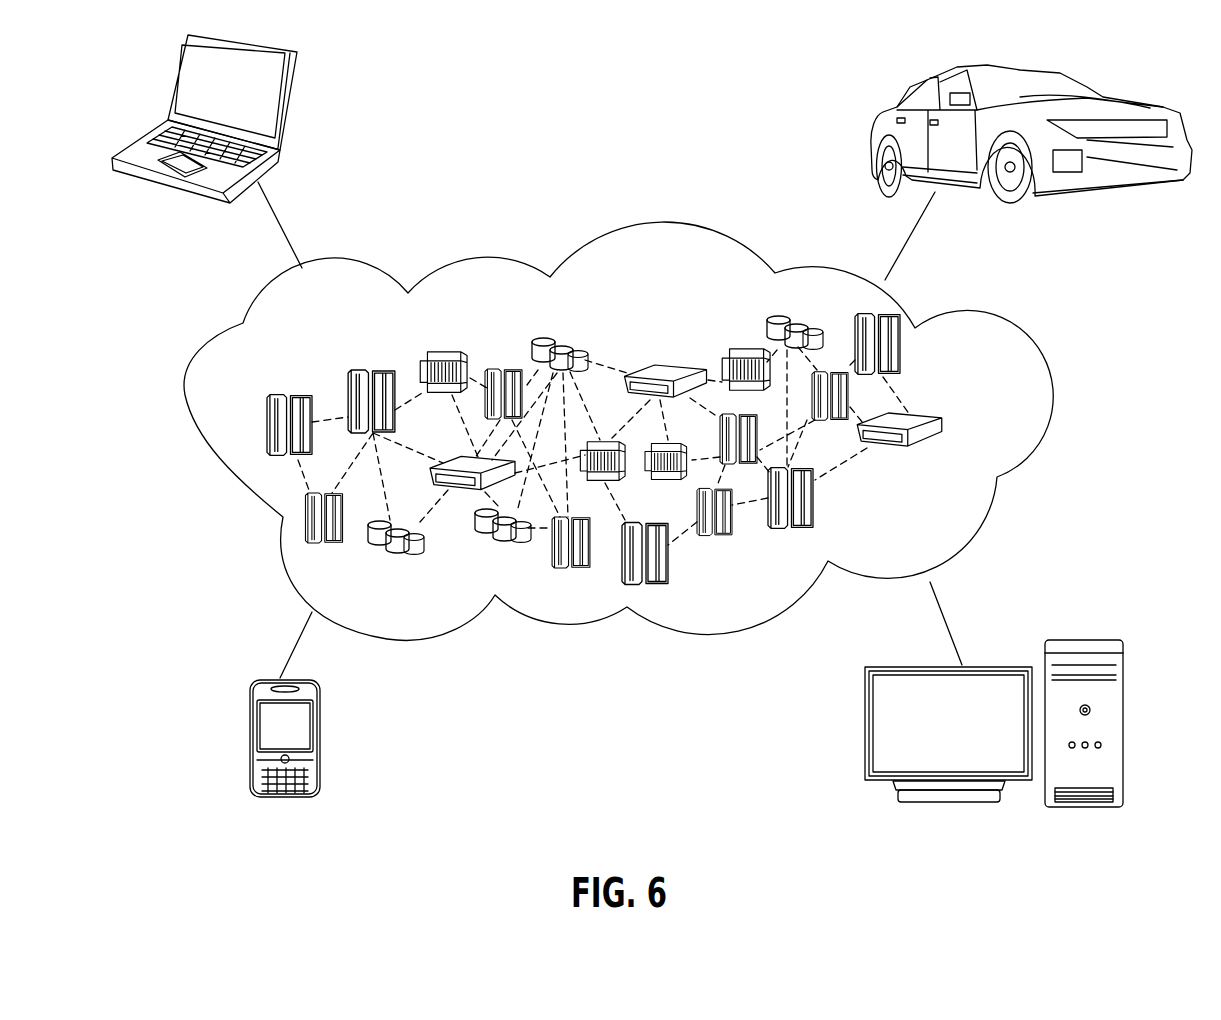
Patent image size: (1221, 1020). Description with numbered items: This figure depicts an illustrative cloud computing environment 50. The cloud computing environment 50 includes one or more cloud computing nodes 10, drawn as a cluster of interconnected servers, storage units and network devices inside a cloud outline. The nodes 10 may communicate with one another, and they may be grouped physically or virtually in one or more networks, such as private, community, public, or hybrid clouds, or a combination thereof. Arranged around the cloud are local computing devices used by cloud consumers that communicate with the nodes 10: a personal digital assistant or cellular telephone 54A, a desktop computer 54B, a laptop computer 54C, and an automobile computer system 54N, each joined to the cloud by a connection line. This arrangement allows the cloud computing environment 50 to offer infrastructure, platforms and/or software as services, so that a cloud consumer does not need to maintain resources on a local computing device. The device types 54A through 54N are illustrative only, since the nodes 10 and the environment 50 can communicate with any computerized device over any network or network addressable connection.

The cloud computing nodes 10 is at (982, 425).
The cloud computing environment 50 is at (1007, 340).
The cellular telephone 54A is at (250, 742).
The desktop computer 54B is at (1090, 640).
The laptop computer 54C is at (290, 105).
The automobile computer system 54N is at (876, 113).